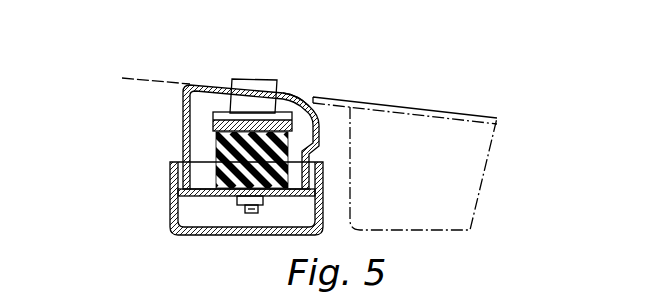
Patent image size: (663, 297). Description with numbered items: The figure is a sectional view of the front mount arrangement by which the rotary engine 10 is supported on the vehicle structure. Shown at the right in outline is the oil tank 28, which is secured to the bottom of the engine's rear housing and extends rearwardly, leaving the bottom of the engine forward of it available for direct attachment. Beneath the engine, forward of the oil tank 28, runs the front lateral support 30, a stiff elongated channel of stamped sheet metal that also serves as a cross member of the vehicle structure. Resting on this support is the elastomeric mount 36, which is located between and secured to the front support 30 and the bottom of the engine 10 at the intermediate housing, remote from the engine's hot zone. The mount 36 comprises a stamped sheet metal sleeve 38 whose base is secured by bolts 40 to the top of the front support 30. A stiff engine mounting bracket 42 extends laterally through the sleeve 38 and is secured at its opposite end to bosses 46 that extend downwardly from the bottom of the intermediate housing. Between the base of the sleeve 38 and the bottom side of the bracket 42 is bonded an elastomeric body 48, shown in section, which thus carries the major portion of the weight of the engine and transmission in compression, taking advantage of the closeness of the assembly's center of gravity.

The rotary engine 10 is at (163, 83).
The oil tank 28 is at (477, 180).
The front lateral support 30 is at (170, 210).
The elastomeric mount 36 is at (182, 150).
The stamped sheet metal sleeve 38 is at (183, 137).
The bolts 40 is at (240, 204).
The engine mounting bracket 42 is at (235, 122).
The bosses 46 is at (282, 91).
The elastomeric body 48 is at (309, 153).